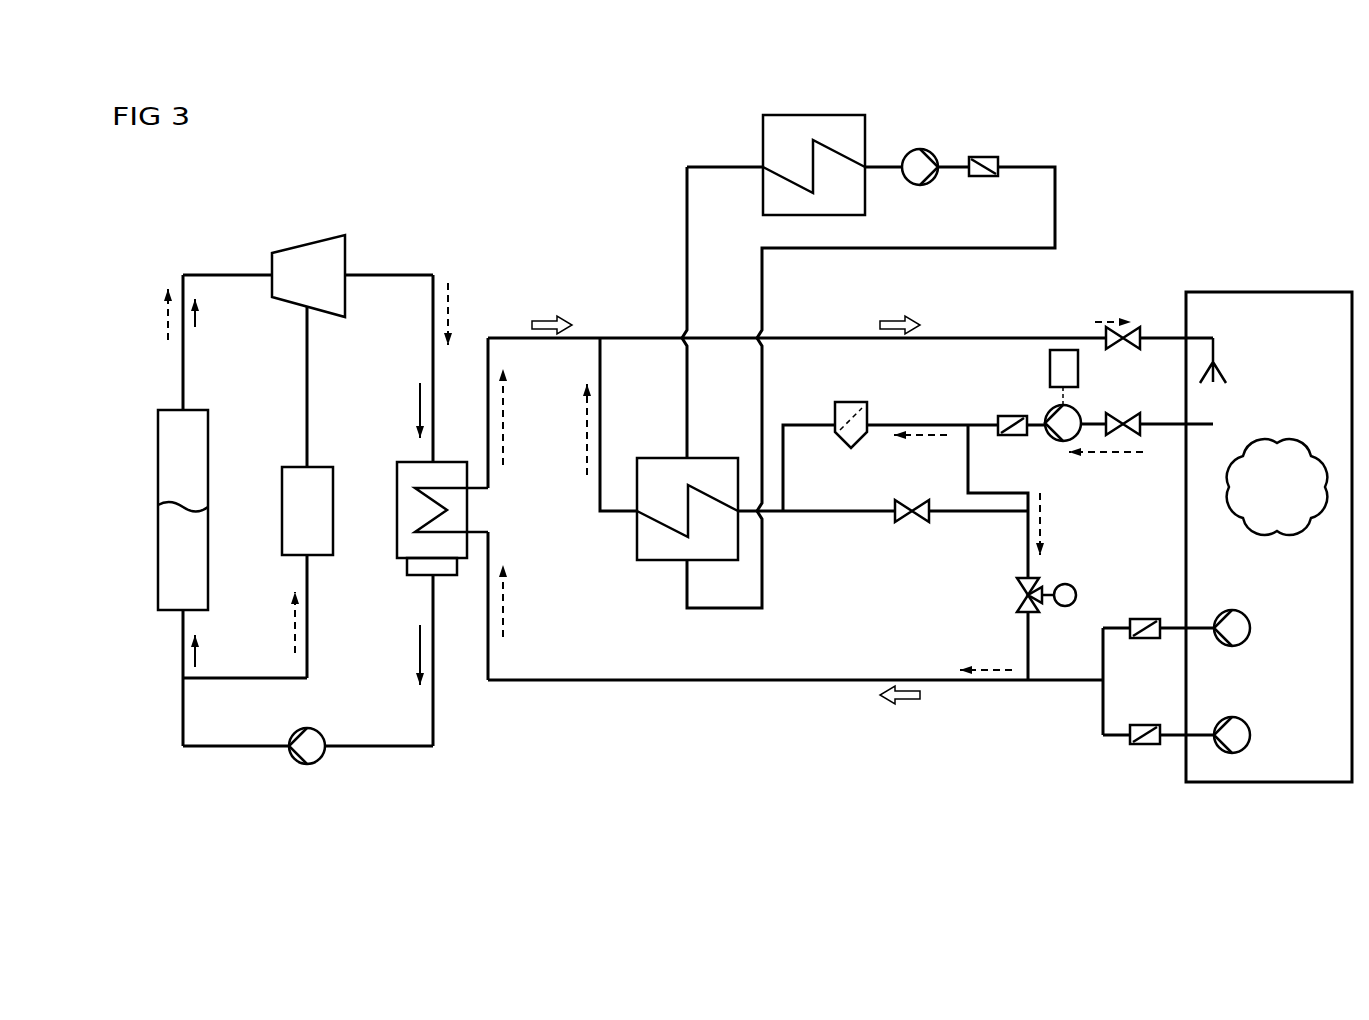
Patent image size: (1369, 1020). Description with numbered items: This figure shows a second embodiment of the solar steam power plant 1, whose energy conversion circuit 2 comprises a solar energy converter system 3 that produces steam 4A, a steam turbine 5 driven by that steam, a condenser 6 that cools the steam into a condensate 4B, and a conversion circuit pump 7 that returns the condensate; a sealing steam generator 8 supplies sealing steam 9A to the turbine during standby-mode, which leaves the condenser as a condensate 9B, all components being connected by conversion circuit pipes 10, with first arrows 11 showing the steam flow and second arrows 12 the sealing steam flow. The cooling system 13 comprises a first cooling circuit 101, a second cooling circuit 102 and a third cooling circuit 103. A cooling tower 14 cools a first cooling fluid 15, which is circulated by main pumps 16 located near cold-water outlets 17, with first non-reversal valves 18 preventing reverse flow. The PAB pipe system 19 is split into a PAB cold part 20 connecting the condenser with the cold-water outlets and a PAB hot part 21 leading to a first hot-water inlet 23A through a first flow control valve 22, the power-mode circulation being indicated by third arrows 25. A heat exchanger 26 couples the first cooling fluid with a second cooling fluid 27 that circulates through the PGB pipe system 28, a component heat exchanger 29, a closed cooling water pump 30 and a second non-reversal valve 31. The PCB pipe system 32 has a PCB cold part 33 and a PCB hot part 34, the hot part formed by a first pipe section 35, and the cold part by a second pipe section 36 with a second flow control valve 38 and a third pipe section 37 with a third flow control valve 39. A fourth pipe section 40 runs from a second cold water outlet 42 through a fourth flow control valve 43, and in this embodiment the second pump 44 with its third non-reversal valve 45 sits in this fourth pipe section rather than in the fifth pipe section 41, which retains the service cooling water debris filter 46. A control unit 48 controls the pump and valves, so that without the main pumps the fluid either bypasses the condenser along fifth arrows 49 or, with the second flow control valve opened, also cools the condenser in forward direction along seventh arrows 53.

The solar steam power plant 1 is at (1272, 177).
The energy conversion circuit 2 is at (377, 215).
The solar energy converter system 3 is at (210, 562).
The steam 4A is at (181, 375).
The condensate 4B is at (160, 565).
The steam turbine 5 is at (302, 243).
The condenser 6 is at (395, 507).
The conversion circuit pump 7 is at (310, 765).
The sealing steam generator 8 is at (280, 507).
The sealing steam 9A is at (305, 400).
The condensate of the sealing steam 9B is at (245, 682).
The conversion circuit pipes 10 is at (228, 273).
The first arrows 11 is at (200, 310).
The second arrows 12 is at (160, 305).
The cooling system 13 is at (535, 775).
The cooling tower 14 is at (1277, 290).
The first cooling fluid 15 is at (1277, 432).
The main pumps 16 is at (1252, 628).
The cold-water outlets 17 is at (1195, 625).
The first non-reversal valves 18 is at (1145, 617).
The PAB pipe system 19 is at (648, 335).
The PAB cold part 20 is at (630, 700).
The PAB hot part 21 is at (965, 332).
The first flow control valve 22 is at (1105, 335).
The first hot-water inlet 23A is at (1185, 335).
The third arrows 25 is at (543, 315).
The heat exchanger 26 is at (712, 456).
The second cooling fluid 27 is at (915, 178).
The PGB pipe system 28 is at (685, 230).
The component heat exchanger 29 is at (760, 145).
The closed cooling water pump 30 is at (918, 148).
The second non-reversal valve 31 is at (985, 155).
The PCB pipe system 32 is at (867, 520).
The PCB cold part 33 is at (815, 520).
The PCB hot part 34 is at (617, 522).
The first pipe section 35 is at (603, 415).
The second pipe section 36 is at (1032, 645).
The third pipe section 37 is at (975, 515).
The second flow control valve 38 is at (1020, 595).
The third flow control valve 39 is at (910, 520).
The fourth pipe section 40 is at (1178, 428).
The fifth pipe section 41 is at (918, 422).
The second cold water outlet 42 is at (1180, 422).
The fourth flow control valve 43 is at (1118, 412).
The second pump 44 is at (1050, 412).
The third non-reversal valve 45 is at (1013, 440).
The service cooling water debris filter 46 is at (850, 400).
The control unit 48 is at (1048, 368).
The fifth arrows 49 is at (584, 448).
The seventh arrows 53 is at (506, 405).
The first cooling circuit 101 is at (690, 700).
The second cooling circuit 102 is at (590, 518).
The third cooling circuit 103 is at (672, 158).